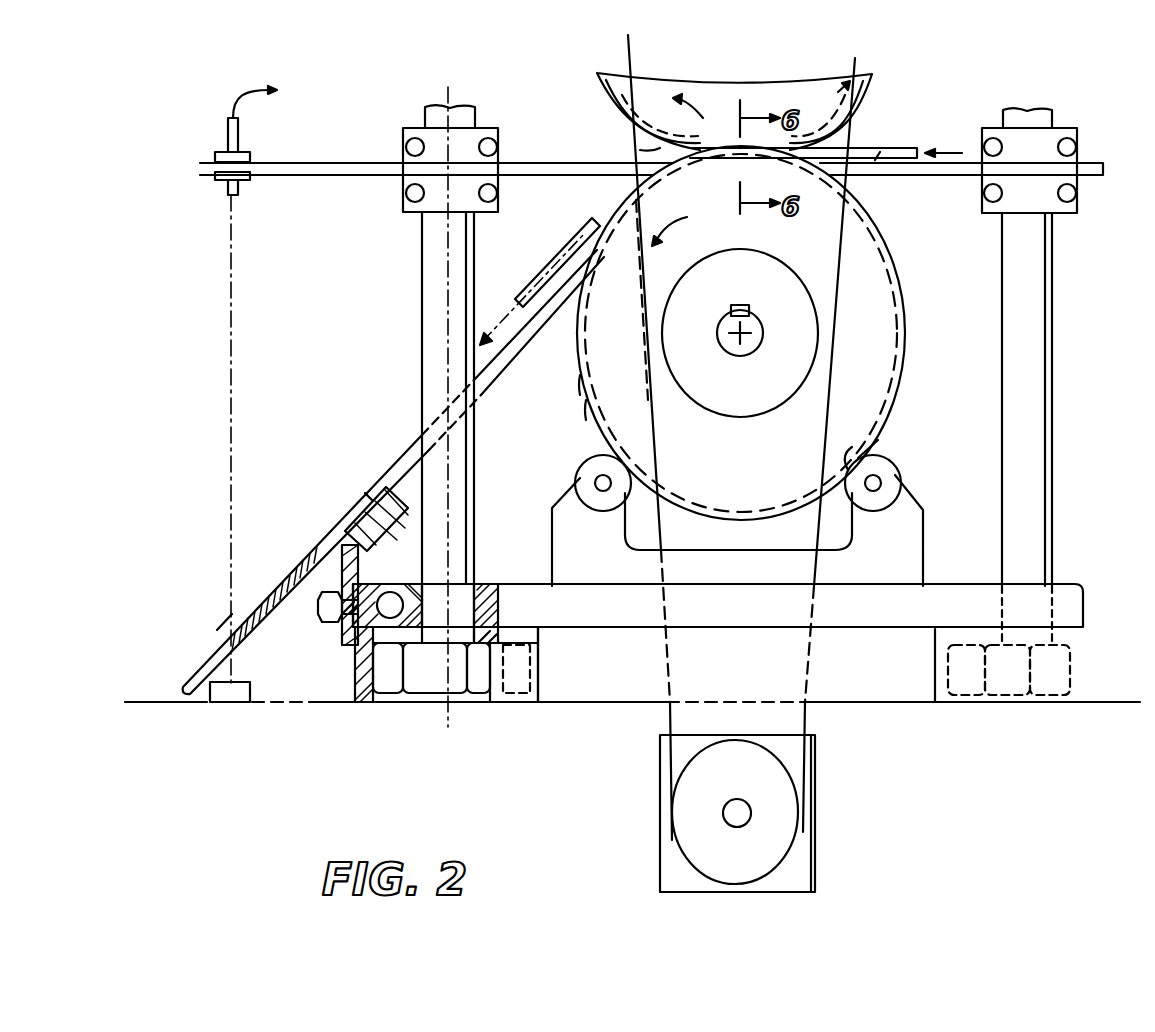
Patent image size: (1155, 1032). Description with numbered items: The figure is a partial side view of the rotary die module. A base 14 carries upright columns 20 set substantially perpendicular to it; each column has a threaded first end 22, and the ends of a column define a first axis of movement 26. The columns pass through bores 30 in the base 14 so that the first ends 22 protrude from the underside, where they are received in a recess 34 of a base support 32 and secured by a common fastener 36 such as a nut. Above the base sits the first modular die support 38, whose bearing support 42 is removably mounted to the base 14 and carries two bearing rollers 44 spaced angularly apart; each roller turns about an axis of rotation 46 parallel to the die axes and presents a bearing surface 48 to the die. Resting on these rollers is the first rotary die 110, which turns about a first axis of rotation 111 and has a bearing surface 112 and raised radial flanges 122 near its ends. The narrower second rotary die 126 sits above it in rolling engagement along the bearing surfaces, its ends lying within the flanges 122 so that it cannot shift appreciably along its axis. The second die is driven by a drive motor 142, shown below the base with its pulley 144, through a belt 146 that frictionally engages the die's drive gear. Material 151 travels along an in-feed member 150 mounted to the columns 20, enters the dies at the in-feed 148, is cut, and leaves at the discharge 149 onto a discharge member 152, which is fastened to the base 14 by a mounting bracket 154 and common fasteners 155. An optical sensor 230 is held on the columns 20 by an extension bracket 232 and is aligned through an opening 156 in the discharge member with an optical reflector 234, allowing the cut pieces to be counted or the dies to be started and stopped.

The base 14 is at (703, 618).
The columns 20 is at (422, 280).
The first end 22 is at (497, 619).
The first axis of movement 26 is at (443, 235).
The bores 30 is at (473, 575).
The base supports 32 is at (540, 663).
The recess 34 is at (393, 700).
The common fastener 36 is at (475, 703).
The first modular die support 38 is at (795, 568).
The bearing support 42 is at (913, 547).
The bearing rollers 44 is at (595, 460).
The axis of rotation 46 is at (878, 456).
The bearing surface 48 is at (860, 455).
The first rotary die 110 is at (897, 322).
The first axis of rotation 111 is at (737, 345).
The bearing surface 112 is at (582, 380).
The raised radial flange 122 is at (587, 403).
The second rotary die 126 is at (862, 72).
The drive motor 142 is at (817, 767).
The motor pulley 144 is at (798, 828).
The belt 146 is at (808, 658).
The in-feed 148 is at (850, 127).
The discharge 149 is at (645, 148).
The in-feed member 150 is at (950, 178).
The material 151 is at (547, 265).
The discharge member 152 is at (423, 442).
The mounting bracket 154 is at (337, 530).
The common fasteners 155 is at (322, 612).
The opening 156 is at (220, 625).
The optical sensor 230 is at (228, 132).
The extension bracket 232 is at (333, 160).
The optical reflector 234 is at (245, 702).